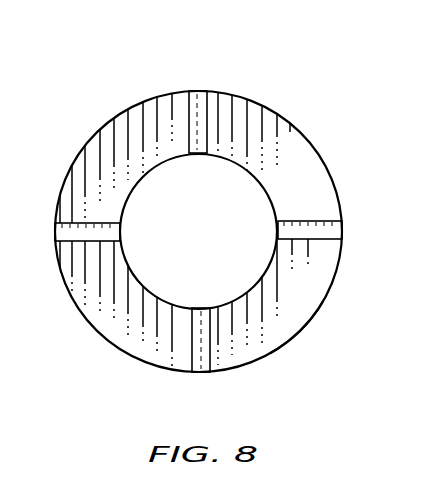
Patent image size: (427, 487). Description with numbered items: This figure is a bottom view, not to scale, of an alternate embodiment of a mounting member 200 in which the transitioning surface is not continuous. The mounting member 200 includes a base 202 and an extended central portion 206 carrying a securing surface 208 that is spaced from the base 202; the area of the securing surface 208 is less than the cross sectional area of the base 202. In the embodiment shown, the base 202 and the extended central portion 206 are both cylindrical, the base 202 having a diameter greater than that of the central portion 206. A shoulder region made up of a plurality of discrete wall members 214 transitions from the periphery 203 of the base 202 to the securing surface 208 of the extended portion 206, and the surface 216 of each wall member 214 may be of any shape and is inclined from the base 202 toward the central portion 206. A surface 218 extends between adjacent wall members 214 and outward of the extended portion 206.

The mounting member 200 is at (316, 74).
The base 202 is at (80, 310).
The periphery 203 is at (317, 314).
The extended central portion 206 is at (133, 180).
The securing surface 208 is at (214, 247).
The discrete wall members 214 is at (207, 113).
The surface of wall members 216 is at (193, 91).
The surface 218 is at (133, 108).